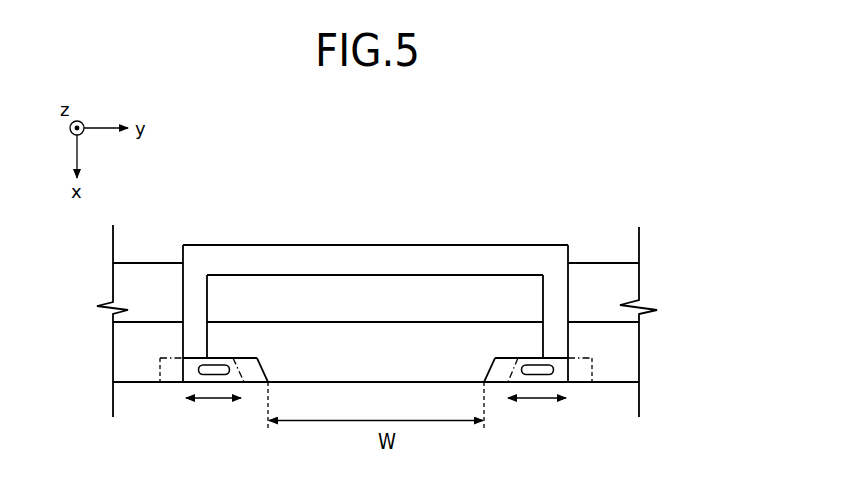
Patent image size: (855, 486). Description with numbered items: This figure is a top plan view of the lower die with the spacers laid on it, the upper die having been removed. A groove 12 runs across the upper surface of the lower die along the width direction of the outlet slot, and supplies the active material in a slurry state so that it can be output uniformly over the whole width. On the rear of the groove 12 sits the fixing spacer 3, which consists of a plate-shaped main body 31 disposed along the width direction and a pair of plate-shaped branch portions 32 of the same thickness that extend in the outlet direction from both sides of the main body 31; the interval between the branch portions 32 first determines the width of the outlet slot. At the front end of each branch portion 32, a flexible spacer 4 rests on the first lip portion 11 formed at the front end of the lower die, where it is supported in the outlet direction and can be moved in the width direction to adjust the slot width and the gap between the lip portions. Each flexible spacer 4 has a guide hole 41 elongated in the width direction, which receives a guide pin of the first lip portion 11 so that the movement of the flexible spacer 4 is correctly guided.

The fixing spacer 3 is at (375, 268).
The main body 31 is at (482, 258).
The branch portions 32 is at (550, 307).
The flexible spacer 4 is at (190, 368).
The guide hole 41 is at (215, 372).
The first lip portion 11 is at (130, 346).
The groove 12 is at (130, 283).